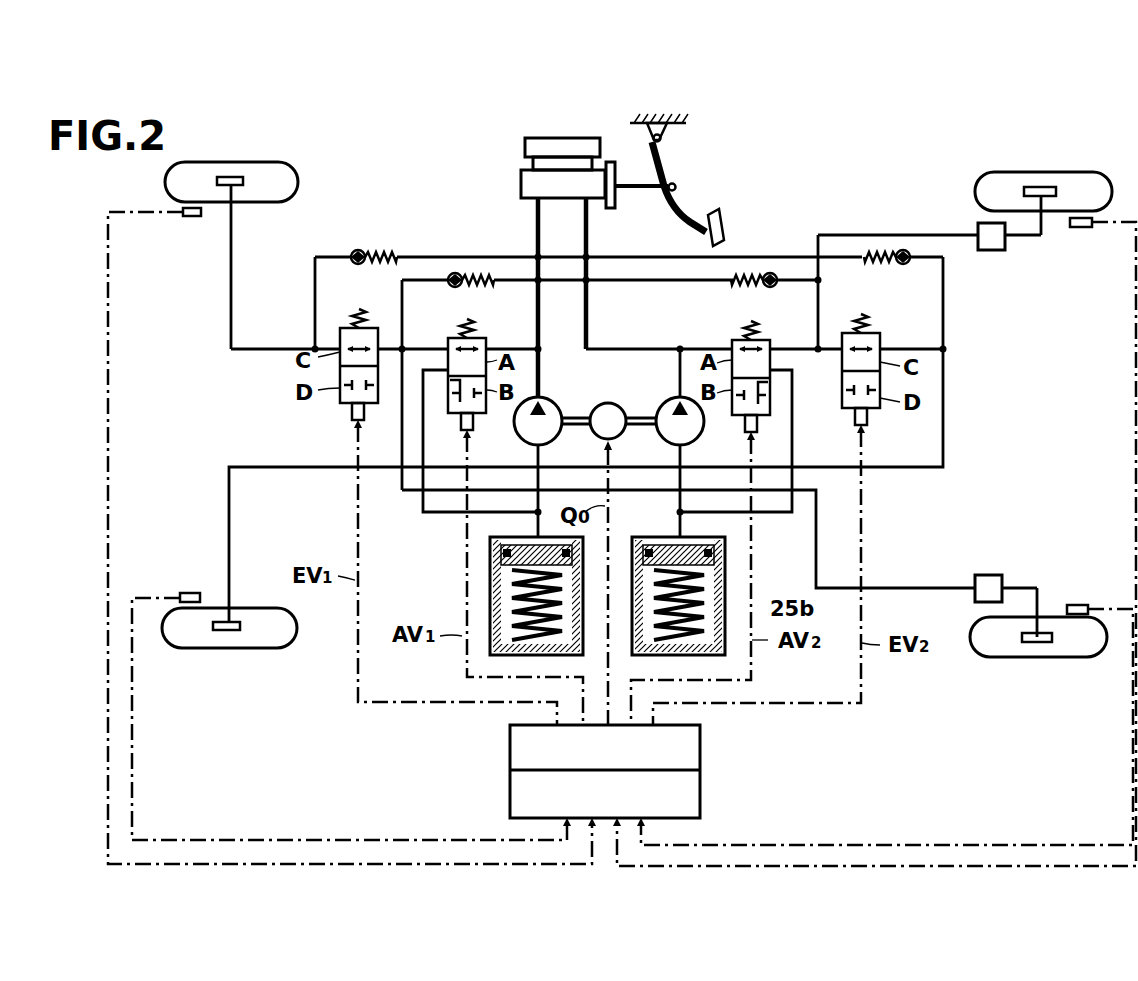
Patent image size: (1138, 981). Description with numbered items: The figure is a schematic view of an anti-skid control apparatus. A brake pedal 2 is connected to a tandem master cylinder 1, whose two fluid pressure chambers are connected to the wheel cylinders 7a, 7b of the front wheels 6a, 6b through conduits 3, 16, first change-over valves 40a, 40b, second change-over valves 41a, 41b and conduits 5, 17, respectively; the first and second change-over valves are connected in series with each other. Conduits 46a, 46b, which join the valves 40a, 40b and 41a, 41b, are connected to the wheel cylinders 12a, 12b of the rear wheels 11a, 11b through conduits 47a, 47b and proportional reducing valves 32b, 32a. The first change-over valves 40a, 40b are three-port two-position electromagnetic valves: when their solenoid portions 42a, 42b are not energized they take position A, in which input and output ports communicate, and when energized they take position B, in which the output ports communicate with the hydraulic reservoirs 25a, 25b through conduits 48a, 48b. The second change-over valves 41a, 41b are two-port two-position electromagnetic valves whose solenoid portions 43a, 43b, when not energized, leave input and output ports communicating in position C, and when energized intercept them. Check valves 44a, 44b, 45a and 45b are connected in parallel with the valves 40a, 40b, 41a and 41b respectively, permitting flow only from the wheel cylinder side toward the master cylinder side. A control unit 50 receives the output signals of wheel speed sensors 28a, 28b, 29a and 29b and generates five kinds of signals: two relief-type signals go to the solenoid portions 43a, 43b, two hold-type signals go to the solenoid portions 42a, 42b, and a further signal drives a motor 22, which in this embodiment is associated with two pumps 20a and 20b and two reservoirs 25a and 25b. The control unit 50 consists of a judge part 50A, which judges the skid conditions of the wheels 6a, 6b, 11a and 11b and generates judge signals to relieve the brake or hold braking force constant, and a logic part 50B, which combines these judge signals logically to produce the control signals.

The tandem master cylinder 1 is at (514, 157).
The brake pedal 2 is at (718, 212).
The conduit 3 is at (536, 224).
The conduit 16 is at (588, 238).
The conduit 5 is at (233, 248).
The front wheel 6a is at (282, 164).
The front wheel 6b is at (274, 652).
The wheel cylinder 7a is at (230, 176).
The wheel cylinder 7b is at (226, 632).
The rear wheel 11a is at (1090, 172).
The rear wheel 11b is at (978, 657).
The wheel cylinder 12a is at (1036, 186).
The wheel cylinder 12b is at (1038, 643).
The conduit 17 is at (945, 388).
The pump 20a is at (541, 397).
The pump 20b is at (668, 402).
The motor 22 is at (608, 402).
The hydraulic reservoir 25a is at (488, 590).
The hydraulic reservoir 25b is at (727, 608).
The wheel speed sensor 28a is at (192, 218).
The wheel speed sensor 28b is at (185, 592).
The wheel speed sensor 29a is at (1080, 228).
The wheel speed sensor 29b is at (1078, 604).
The proportional reducing valve 32a is at (992, 252).
The proportional reducing valve 32b is at (987, 574).
The first change-over valve 40a is at (470, 336).
The first change-over valve 40b is at (730, 344).
The second change-over valve 41a is at (350, 327).
The second change-over valve 41b is at (878, 345).
The solenoid portion 42a is at (476, 422).
The solenoid portion 42b is at (744, 424).
The solenoid portion 43a is at (352, 414).
The solenoid portion 43b is at (868, 420).
The check valve 44a is at (452, 272).
The check valve 44b is at (748, 284).
The check valve 45a is at (358, 249).
The check valve 45b is at (878, 252).
The conduit 46a is at (405, 346).
The conduit 46b is at (832, 346).
The conduit 47a is at (907, 587).
The conduit 47b is at (926, 233).
The conduit 48a is at (421, 500).
The conduit 48b is at (795, 420).
The control unit 50 is at (607, 775).
The judge part 50A is at (512, 791).
The logic part 50B is at (512, 745).